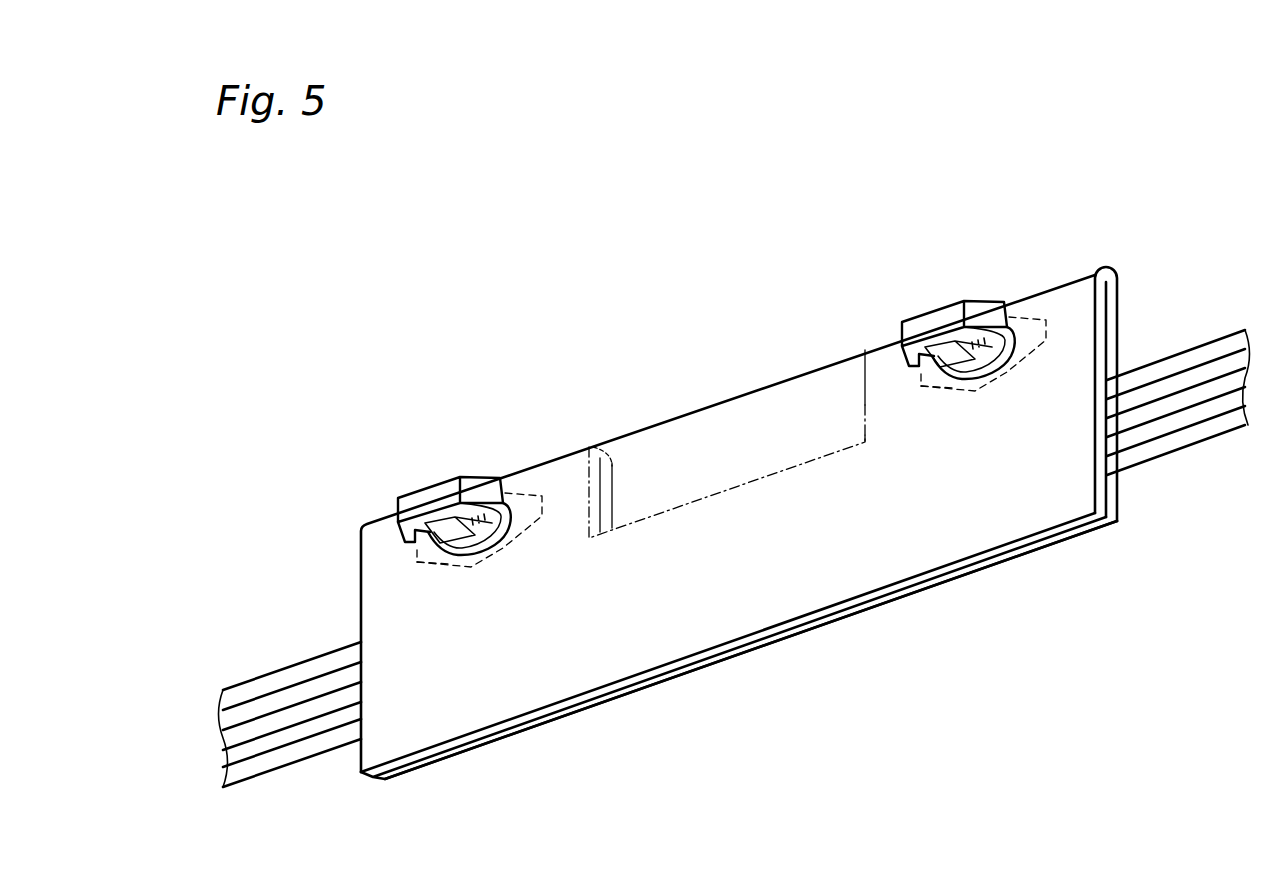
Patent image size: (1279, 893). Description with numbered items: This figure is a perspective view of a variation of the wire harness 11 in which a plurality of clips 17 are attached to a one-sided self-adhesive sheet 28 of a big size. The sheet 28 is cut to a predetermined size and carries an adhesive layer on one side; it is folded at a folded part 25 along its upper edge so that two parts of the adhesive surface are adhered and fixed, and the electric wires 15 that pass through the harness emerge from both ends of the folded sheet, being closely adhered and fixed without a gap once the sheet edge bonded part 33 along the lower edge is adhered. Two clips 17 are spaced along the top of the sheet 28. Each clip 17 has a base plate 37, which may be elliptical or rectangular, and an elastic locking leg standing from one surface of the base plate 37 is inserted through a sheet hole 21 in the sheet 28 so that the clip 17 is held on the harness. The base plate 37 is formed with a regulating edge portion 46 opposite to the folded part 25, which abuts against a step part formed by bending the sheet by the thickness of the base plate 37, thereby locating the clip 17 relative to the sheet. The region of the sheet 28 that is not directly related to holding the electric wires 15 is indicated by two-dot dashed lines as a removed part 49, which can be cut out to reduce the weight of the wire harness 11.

The wire harness 11 is at (783, 486).
The electric wires 15 is at (1200, 447).
The clip 17 is at (726, 421).
The sheet hole 21 is at (488, 550).
The folded part 25 is at (783, 513).
The one-sided self-adhesive sheet 28 is at (1120, 298).
The sheet edge bonded part 33 is at (490, 748).
The base plate 37 is at (507, 552).
The regulating edge portion 46 is at (480, 572).
The removed part 49 is at (865, 400).